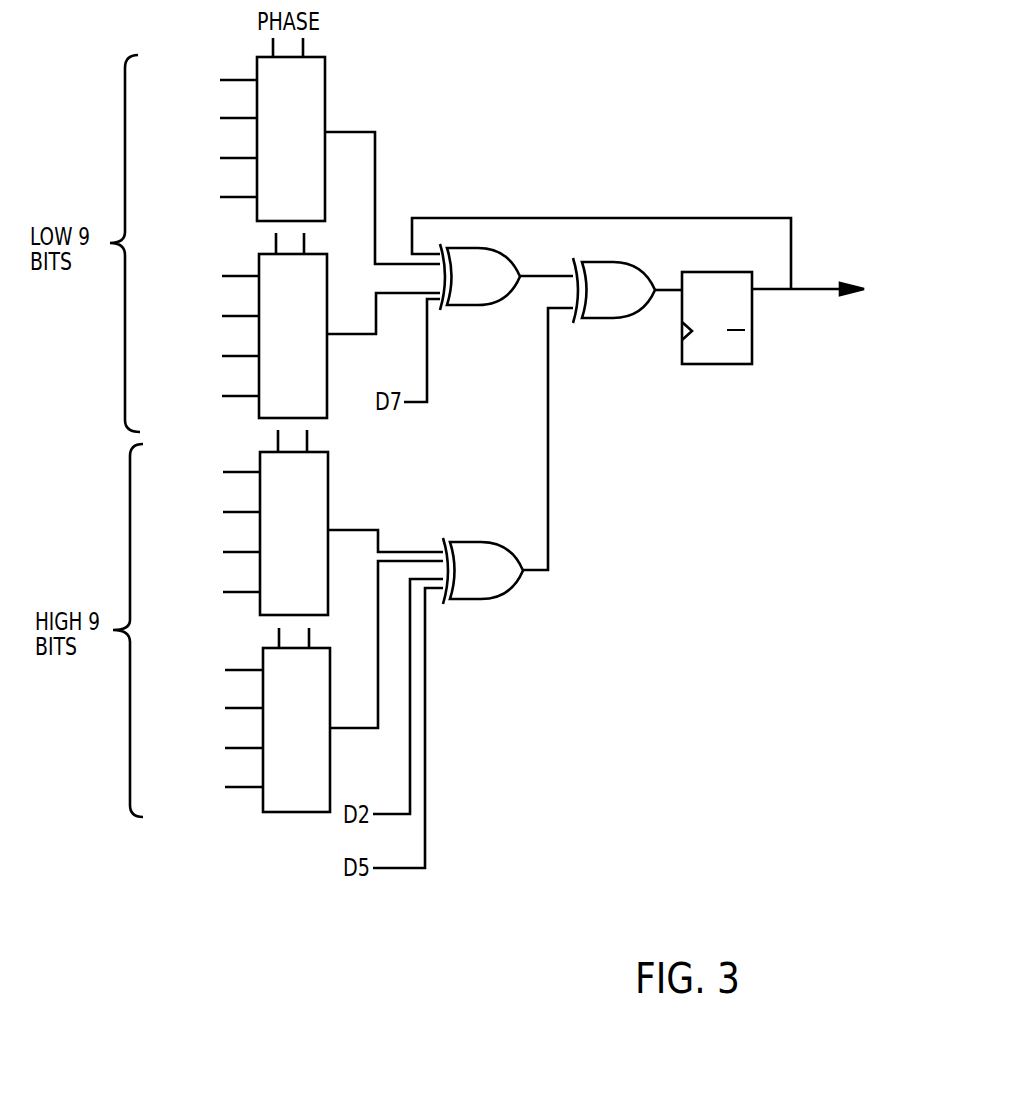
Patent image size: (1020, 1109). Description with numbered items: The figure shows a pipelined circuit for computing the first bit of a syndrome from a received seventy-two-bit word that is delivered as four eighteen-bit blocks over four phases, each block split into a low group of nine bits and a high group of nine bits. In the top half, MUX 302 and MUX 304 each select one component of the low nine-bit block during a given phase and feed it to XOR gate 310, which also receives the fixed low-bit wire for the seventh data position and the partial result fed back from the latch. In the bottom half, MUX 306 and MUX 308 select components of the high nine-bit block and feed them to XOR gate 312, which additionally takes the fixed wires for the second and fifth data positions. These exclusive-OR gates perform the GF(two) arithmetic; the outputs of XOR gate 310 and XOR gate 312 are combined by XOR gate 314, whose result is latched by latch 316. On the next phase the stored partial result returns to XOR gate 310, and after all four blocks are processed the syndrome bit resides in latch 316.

The MUX 302 is at (318, 77).
The MUX 304 is at (322, 405).
The MUX 306 is at (322, 480).
The MUX 308 is at (286, 812).
The XOR gate 310 is at (488, 300).
The XOR gate 312 is at (500, 600).
The XOR gate 314 is at (612, 314).
The latch 316 is at (728, 365).